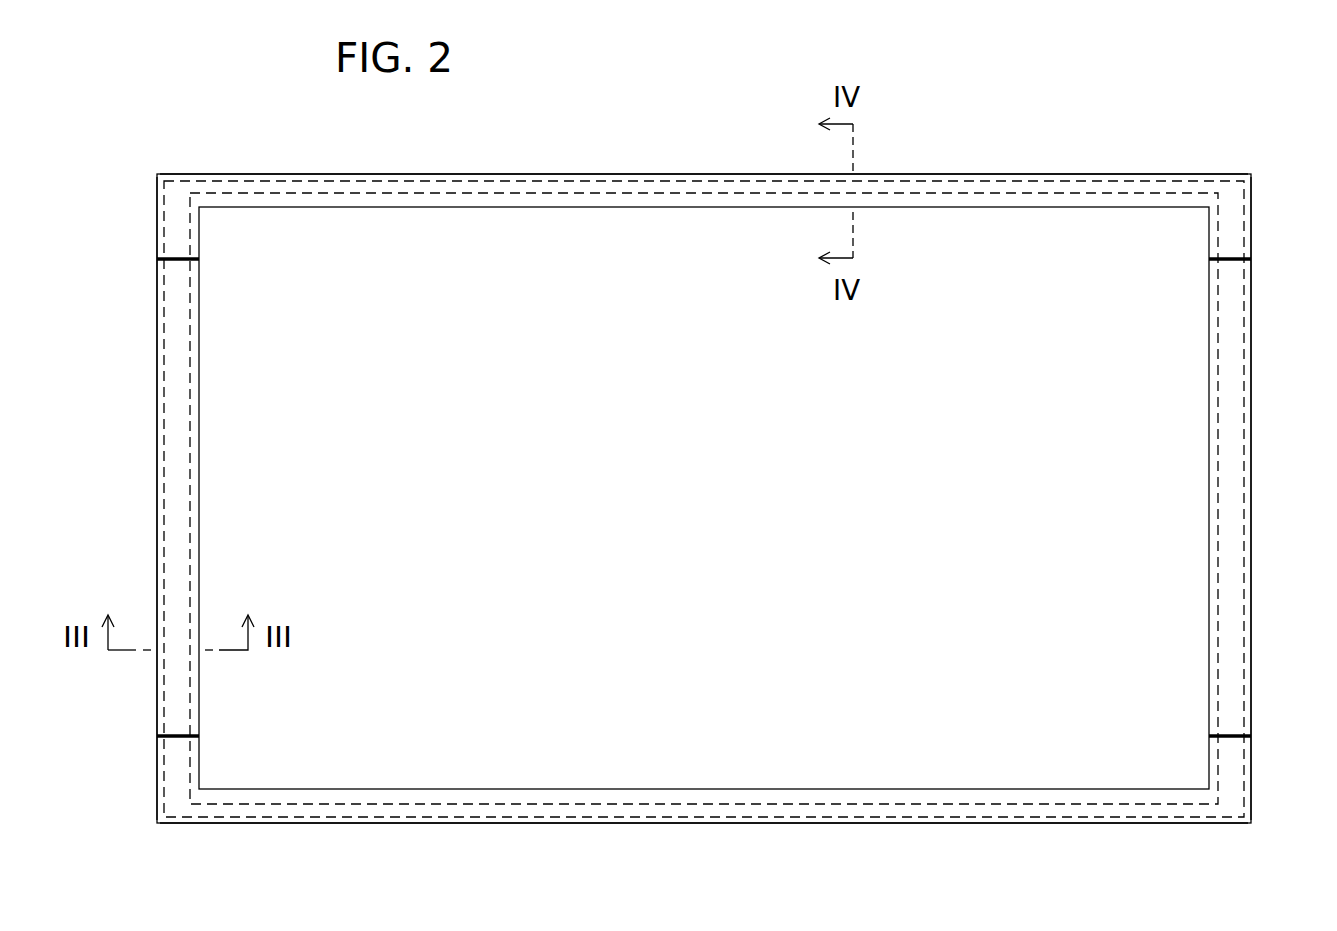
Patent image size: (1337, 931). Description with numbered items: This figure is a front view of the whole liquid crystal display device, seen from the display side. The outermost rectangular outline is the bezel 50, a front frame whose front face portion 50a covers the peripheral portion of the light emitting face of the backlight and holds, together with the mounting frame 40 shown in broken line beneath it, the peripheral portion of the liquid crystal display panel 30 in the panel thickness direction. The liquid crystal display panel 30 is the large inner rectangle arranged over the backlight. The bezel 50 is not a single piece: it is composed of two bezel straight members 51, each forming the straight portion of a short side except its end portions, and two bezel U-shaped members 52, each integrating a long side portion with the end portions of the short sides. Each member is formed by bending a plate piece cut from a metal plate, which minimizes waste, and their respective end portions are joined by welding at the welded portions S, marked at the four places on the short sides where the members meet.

The liquid crystal display panel 30 is at (676, 511).
The mounting frame 40 is at (1070, 178).
The bezel 50 is at (996, 172).
The front face portion 50a is at (905, 200).
The bezel straight member 51 is at (157, 484).
The bezel U-shaped member 52 is at (714, 173).
The welded portion S is at (170, 258).